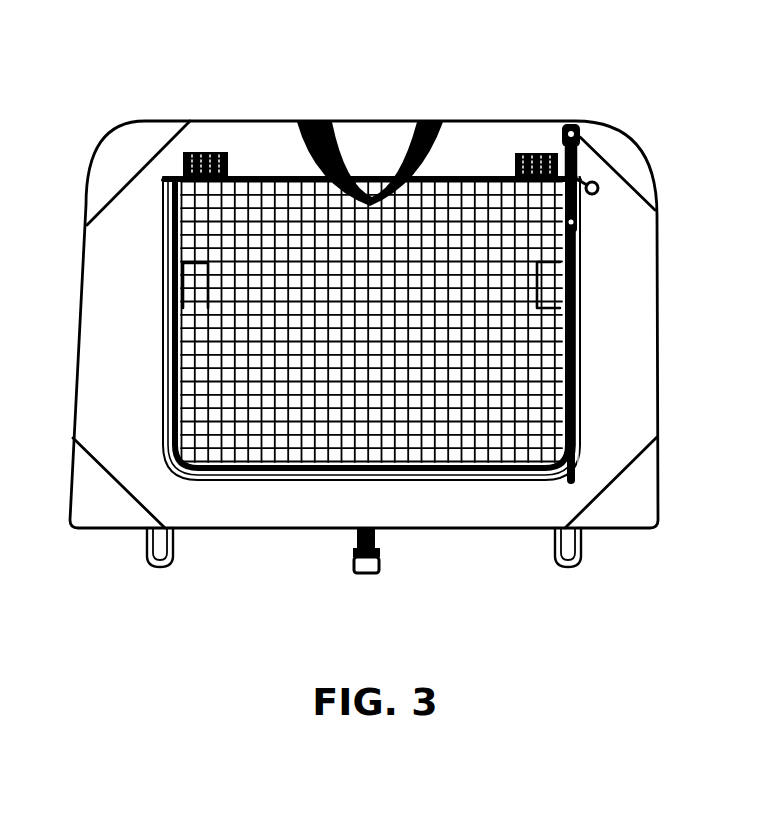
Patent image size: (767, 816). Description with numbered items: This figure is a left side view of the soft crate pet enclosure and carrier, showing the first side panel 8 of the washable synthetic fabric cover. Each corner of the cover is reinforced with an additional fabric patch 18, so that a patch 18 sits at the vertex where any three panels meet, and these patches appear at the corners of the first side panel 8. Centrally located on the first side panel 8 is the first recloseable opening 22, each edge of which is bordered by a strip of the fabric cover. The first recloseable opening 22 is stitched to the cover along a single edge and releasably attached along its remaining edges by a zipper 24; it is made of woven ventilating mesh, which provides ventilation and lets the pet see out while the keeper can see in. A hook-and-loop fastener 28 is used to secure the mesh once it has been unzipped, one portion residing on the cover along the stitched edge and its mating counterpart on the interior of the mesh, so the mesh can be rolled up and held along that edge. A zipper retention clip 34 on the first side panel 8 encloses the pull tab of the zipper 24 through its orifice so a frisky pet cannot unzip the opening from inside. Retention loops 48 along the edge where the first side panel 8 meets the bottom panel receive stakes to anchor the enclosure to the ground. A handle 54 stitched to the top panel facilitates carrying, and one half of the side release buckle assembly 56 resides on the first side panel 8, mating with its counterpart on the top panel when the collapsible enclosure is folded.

The first side panel 8 is at (250, 503).
The fabric patch 18 is at (627, 143).
The first recloseable opening 22 is at (577, 412).
The zipper 24 is at (580, 225).
The hook-and-loop fastener 28 is at (212, 160).
The zipper retention clip 34 is at (567, 124).
The retention loop 48 is at (148, 550).
The handle 54 is at (330, 137).
The side release buckle assembly 56 is at (358, 538).